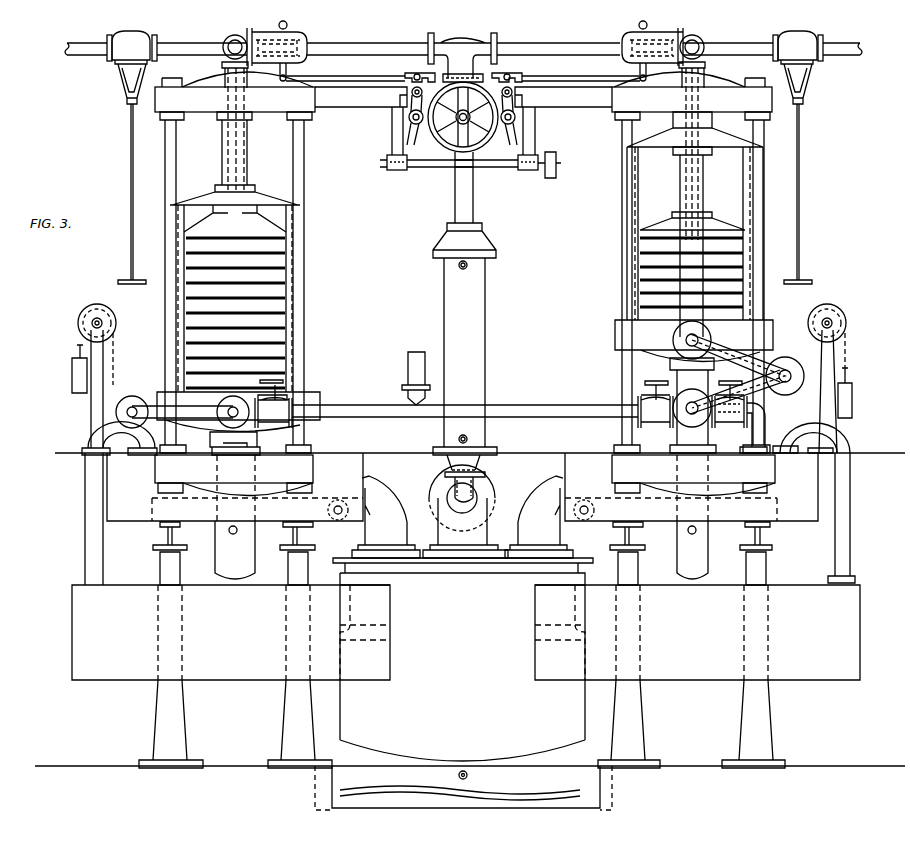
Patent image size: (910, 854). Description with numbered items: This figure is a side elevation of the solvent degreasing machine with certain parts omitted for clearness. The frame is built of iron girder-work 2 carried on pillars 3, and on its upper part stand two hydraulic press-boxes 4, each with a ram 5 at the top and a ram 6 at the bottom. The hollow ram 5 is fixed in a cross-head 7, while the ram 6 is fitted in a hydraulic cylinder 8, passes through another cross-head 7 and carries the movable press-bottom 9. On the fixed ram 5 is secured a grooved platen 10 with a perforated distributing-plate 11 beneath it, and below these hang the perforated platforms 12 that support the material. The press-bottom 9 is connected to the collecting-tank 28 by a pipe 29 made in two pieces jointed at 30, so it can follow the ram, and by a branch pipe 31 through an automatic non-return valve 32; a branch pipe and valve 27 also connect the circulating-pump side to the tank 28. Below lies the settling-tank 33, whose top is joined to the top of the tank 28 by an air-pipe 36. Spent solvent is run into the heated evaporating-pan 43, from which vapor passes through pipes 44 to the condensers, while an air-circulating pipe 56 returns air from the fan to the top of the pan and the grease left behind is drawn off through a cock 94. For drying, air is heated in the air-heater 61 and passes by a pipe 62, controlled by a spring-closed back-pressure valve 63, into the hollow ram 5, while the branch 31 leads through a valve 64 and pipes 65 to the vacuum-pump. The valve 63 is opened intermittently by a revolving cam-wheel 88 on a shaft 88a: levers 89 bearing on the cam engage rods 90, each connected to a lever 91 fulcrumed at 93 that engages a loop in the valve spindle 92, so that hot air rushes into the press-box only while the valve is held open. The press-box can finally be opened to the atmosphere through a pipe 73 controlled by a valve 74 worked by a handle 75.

The iron girder-work 2 is at (761, 536).
The pillars 3 is at (462, 440).
The hydraulic press-box 4 is at (258, 202).
The ram 5 is at (243, 156).
The ram 6 is at (250, 441).
The cross-head 7 is at (465, 284).
The hydraulic cylinder 8 is at (461, 550).
The movable press-bottom 9 is at (465, 375).
The platen 10 is at (262, 224).
The distributing-plate 11 is at (672, 238).
The perforated platforms 12 is at (706, 265).
The branch pipe and valve 27 is at (338, 520).
The collecting-tank 28 is at (462, 487).
The pipe 29 is at (722, 333).
The joint 30 is at (126, 398).
The branch pipe 31 is at (766, 418).
The valve 32 is at (728, 418).
The settling-tank 33 is at (466, 632).
The air-pipe 36 is at (858, 547).
The evaporating-pan 43 is at (463, 659).
The pipes 44 is at (392, 532).
The pipe 56 is at (478, 492).
The air-heater 61 is at (465, 339).
The pipe 62 is at (413, 48).
The back-pressure valve 63 is at (229, 38).
The valve 64 is at (655, 410).
The pipes 65 is at (322, 408).
The pipe 73 is at (80, 56).
The valve 74 is at (465, 67).
The handle 75 is at (799, 214).
The cam-wheel 88 is at (484, 152).
The shaft 88a is at (432, 165).
The levers 89 is at (410, 109).
The rods 90 is at (356, 83).
The lever 91 is at (637, 72).
The spindle 92 is at (318, 46).
The fulcrum 93 is at (288, 27).
The cock 94 is at (468, 775).